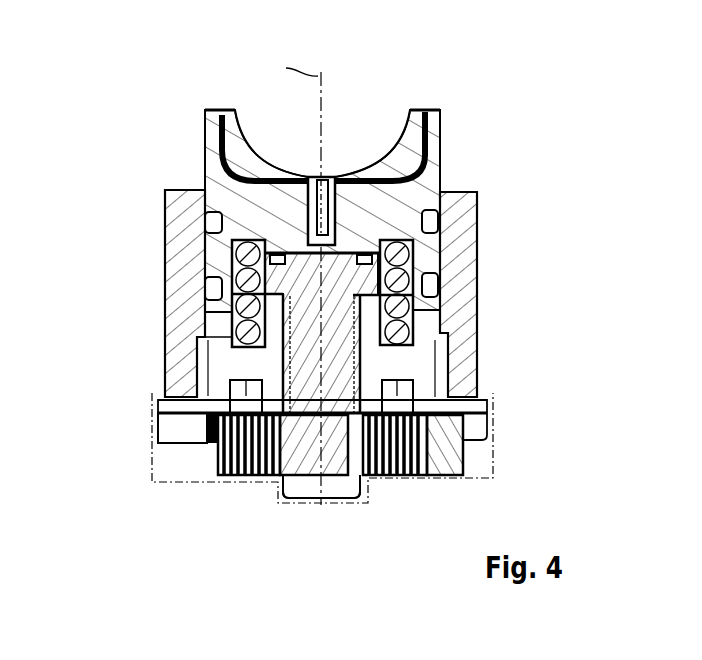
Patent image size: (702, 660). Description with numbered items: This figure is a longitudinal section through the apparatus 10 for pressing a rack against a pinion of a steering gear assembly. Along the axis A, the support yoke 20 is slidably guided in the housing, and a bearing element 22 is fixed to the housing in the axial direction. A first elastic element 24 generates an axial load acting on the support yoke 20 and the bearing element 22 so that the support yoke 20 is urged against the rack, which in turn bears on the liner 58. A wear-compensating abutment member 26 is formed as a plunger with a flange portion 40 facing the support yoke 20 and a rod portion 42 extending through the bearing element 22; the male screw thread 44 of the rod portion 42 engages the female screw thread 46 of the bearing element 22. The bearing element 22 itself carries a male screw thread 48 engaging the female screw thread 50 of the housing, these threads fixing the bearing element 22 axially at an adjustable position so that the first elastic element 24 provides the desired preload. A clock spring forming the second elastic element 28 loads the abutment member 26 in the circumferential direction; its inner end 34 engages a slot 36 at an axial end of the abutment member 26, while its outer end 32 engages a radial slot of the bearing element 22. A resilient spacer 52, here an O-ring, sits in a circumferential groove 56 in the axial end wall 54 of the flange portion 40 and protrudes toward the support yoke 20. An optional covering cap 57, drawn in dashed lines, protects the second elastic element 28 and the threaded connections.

The apparatus 10 is at (386, 89).
The support yoke 20 is at (212, 172).
The bearing element 22 is at (428, 376).
The first elastic element 24 is at (425, 318).
The wear-compensating abutment member 26 is at (365, 357).
The second elastic element 28 is at (218, 455).
The outer end of the clock spring 32 is at (444, 467).
The inner end of the clock spring 34 is at (303, 463).
The slot 36 is at (337, 490).
The flange portion 40 is at (412, 266).
The rod portion 42 is at (321, 397).
The male screw thread 44 is at (283, 352).
The female screw thread 46 is at (246, 396).
The male screw thread 48 is at (447, 347).
The female screw thread 50 is at (397, 396).
The resilient spacer 52 is at (362, 257).
The axial end wall 54 is at (347, 252).
The circumferential groove 56 is at (321, 259).
The covering cap 57 is at (495, 450).
The liner 58 is at (260, 164).